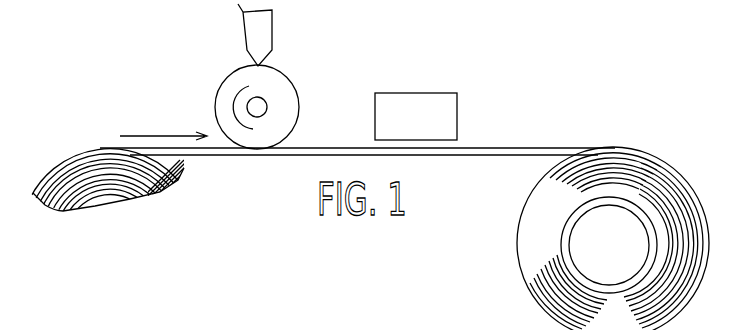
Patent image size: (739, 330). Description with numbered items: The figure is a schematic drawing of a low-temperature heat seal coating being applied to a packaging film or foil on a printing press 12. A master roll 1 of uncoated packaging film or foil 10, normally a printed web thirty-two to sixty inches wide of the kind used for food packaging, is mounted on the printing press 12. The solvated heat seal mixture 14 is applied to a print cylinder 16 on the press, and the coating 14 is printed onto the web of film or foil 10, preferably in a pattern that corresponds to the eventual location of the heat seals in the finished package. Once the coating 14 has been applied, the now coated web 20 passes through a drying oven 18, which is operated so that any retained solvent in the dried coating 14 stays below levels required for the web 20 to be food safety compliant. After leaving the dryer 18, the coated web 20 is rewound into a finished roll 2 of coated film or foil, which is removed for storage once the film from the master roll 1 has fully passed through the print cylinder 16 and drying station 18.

The master roll 1 is at (58, 168).
The finished roll 2 is at (680, 175).
The packaging film or foil 10 is at (210, 157).
The printing press 12 is at (118, 78).
The heat seal coating 14 is at (222, 85).
The print cylinder 16 is at (297, 91).
The drying oven 18 is at (415, 93).
The coated web 20 is at (521, 147).